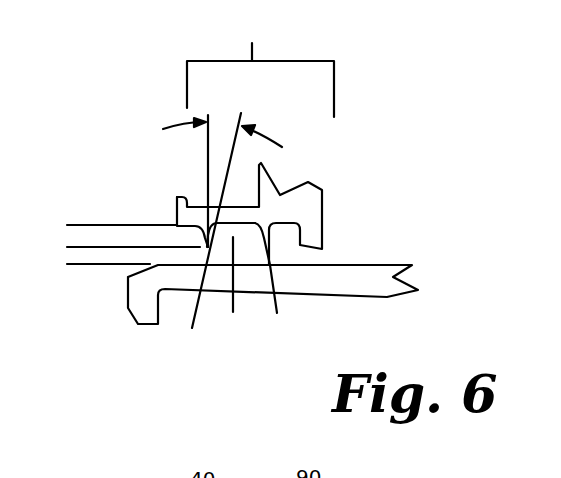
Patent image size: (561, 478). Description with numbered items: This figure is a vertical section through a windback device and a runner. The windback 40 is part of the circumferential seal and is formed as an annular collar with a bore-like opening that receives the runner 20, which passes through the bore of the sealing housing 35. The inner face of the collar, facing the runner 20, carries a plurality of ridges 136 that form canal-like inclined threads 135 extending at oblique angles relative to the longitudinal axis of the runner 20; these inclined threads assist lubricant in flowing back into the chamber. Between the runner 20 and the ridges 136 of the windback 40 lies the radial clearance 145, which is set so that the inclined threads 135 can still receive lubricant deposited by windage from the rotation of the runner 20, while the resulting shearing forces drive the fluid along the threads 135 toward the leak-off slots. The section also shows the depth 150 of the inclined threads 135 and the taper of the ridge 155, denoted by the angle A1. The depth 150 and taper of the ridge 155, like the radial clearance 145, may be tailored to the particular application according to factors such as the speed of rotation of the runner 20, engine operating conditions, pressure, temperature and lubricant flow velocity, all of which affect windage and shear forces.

The runner 20 is at (387, 295).
The sealing housing 35 is at (313, 194).
The windback 40 is at (260, 67).
The inclined threads 135 is at (240, 237).
The ridges 136 is at (234, 289).
The radial clearance 145 is at (82, 293).
The depth 150 is at (120, 277).
The taper of the ridge 155 is at (240, 110).
The taper angle A1 is at (222, 131).